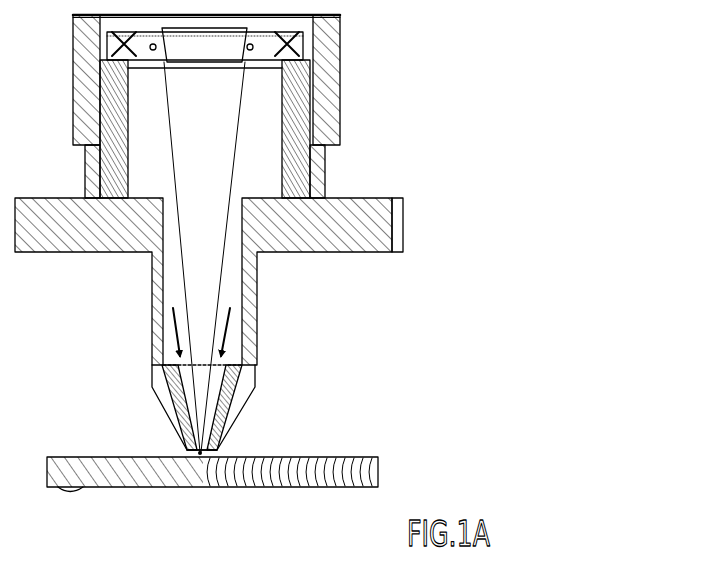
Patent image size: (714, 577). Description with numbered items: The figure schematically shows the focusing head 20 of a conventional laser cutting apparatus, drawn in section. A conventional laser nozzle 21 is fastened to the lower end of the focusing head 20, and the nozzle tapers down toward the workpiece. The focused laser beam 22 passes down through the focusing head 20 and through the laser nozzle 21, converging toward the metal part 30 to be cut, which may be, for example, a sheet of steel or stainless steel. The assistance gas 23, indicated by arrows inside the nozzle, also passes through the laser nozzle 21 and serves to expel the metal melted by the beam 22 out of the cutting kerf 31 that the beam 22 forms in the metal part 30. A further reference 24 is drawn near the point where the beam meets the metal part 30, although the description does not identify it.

The focusing head 20 is at (257, 312).
The laser nozzle 21 is at (227, 407).
The laser beam 22 is at (217, 167).
The assistance gas 23 is at (163, 333).
The focal point 24 is at (197, 455).
The metal part 30 is at (94, 470).
The cutting kerf 31 is at (225, 487).